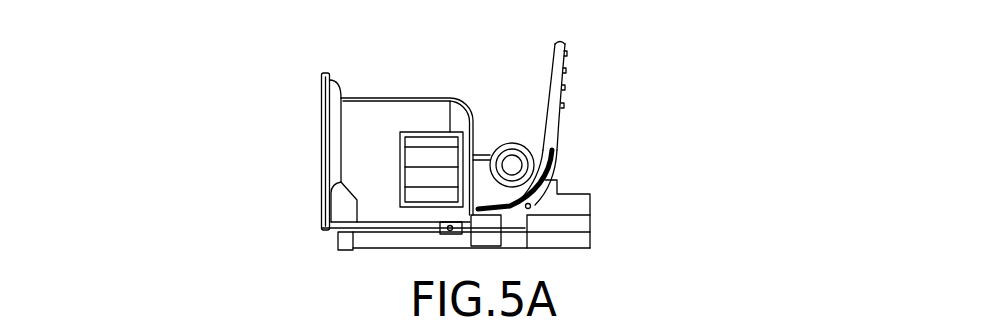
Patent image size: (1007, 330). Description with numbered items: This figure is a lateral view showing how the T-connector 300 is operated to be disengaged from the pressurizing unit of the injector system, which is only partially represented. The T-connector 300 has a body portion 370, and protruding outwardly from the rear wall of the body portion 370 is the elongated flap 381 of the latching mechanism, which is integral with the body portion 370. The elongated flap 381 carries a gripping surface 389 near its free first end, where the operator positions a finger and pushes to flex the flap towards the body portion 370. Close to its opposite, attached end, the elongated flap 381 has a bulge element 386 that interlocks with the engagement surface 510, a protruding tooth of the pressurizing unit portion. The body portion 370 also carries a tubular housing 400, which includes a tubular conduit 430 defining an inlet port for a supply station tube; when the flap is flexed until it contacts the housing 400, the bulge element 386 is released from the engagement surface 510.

The T-connector 300 is at (230, 88).
The body portion 370 is at (360, 157).
The elongated flap 381 is at (553, 68).
The bulge element 386 is at (530, 211).
The gripping surface 389 is at (567, 83).
The housing 400 is at (507, 137).
The tubular conduit 430 is at (505, 173).
The engagement surface 510 is at (512, 228).